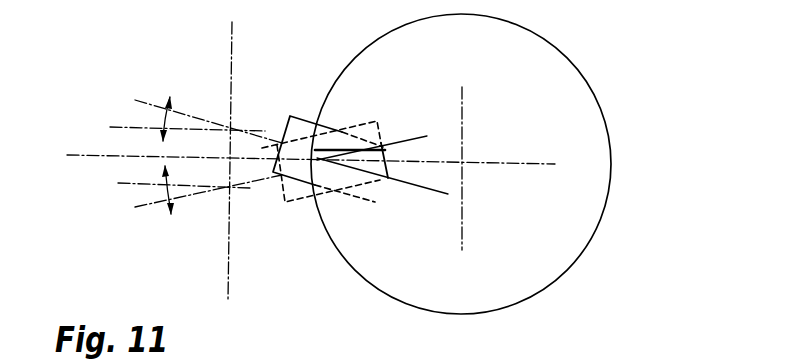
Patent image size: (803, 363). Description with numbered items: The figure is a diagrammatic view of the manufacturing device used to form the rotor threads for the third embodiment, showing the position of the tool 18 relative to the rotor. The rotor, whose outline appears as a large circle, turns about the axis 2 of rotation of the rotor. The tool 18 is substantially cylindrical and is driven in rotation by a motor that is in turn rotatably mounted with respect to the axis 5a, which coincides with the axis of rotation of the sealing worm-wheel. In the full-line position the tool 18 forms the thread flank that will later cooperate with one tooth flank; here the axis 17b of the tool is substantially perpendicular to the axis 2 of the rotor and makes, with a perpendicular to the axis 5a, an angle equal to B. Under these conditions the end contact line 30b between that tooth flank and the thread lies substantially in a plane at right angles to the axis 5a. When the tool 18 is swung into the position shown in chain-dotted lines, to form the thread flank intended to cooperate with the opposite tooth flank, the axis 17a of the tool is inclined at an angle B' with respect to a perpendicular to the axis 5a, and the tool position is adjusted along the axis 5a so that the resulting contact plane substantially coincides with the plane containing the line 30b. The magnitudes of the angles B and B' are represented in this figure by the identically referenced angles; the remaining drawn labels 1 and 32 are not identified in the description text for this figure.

The rotating drum 1 is at (557, 73).
The axis of rotation of the rotor 2 is at (467, 163).
The axis 5a is at (242, 172).
The axis of the tool 17a is at (263, 181).
The axis of the tool 17b is at (268, 142).
The tool 18 is at (300, 130).
The end contact line 30b is at (338, 148).
The light beam 32 is at (153, 127).
The angle B is at (158, 106).
The angle B' is at (156, 204).